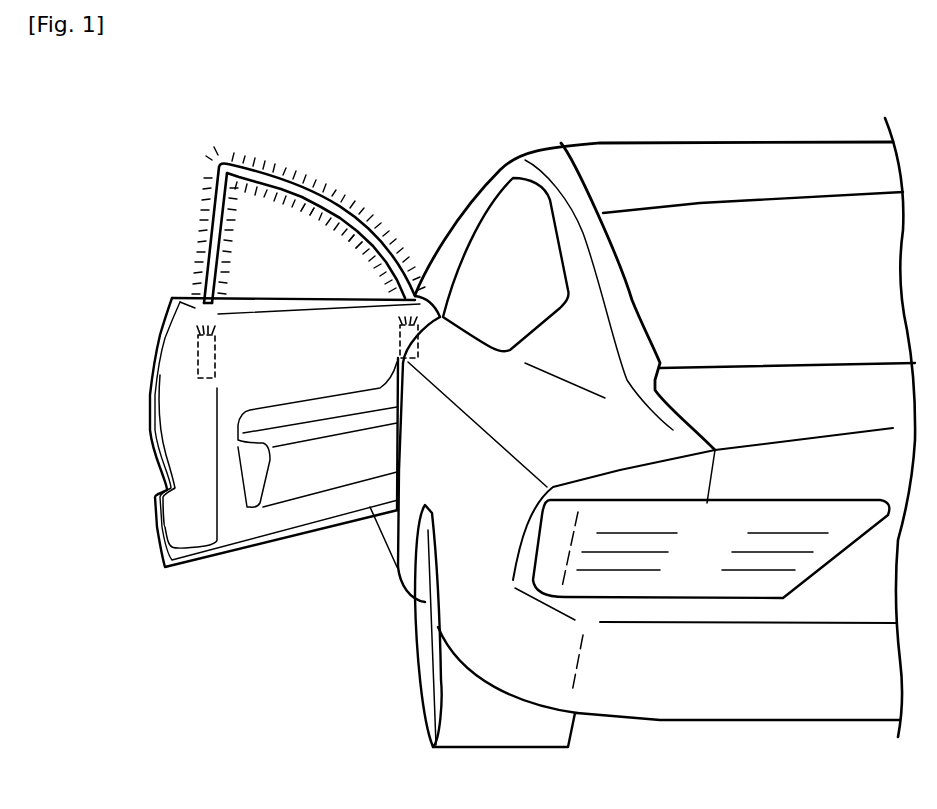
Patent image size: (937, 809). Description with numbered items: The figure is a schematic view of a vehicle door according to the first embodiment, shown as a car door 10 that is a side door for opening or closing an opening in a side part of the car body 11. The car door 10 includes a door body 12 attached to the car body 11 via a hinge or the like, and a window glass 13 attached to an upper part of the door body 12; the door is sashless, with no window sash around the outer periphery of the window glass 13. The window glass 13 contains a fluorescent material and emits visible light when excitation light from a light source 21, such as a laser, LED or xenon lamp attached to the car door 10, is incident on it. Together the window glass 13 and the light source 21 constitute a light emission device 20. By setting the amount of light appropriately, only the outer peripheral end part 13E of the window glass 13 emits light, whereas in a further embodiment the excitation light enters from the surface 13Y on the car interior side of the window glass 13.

The car door 10 is at (115, 565).
The car body 11 is at (482, 213).
The door body 12 is at (230, 525).
The window glass 13 is at (247, 212).
The surface on the car interior side 13Y is at (300, 227).
The outer peripheral end part 13E is at (360, 220).
The light emission device 20 is at (282, 143).
The light source 21 is at (198, 360).